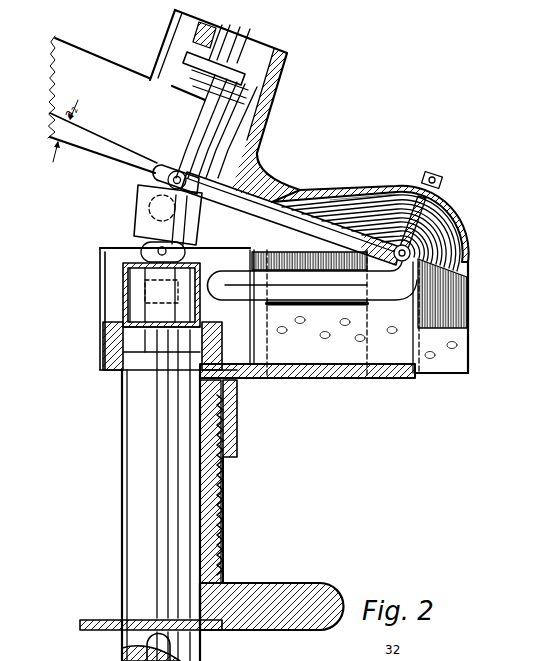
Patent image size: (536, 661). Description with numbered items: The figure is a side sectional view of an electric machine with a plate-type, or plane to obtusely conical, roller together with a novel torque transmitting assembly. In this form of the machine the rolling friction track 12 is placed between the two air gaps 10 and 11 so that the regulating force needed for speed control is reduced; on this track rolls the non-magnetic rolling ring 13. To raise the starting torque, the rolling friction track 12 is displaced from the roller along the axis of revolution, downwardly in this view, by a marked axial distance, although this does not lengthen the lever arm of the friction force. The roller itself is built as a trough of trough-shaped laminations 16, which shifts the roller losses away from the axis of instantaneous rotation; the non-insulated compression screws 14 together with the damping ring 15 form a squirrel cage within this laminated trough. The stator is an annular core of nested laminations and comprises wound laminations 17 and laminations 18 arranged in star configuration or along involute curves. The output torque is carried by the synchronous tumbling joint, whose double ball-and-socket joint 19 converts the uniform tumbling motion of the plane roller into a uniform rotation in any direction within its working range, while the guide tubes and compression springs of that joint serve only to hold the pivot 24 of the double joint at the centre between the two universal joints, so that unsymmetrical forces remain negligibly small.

The air gap 10 is at (452, 252).
The air gap 11 is at (278, 170).
The rolling friction track 12 is at (455, 228).
The non-magnetic rolling ring 13 is at (403, 244).
The compression screws 14 is at (434, 175).
The damping ring 15 is at (457, 212).
The trough-shaped laminations 16 is at (362, 208).
The wound laminations 17 is at (363, 310).
The laminations in star configuration 18 is at (453, 362).
The double ball-and-socket joint 19 is at (160, 176).
The pivot 24 is at (200, 222).